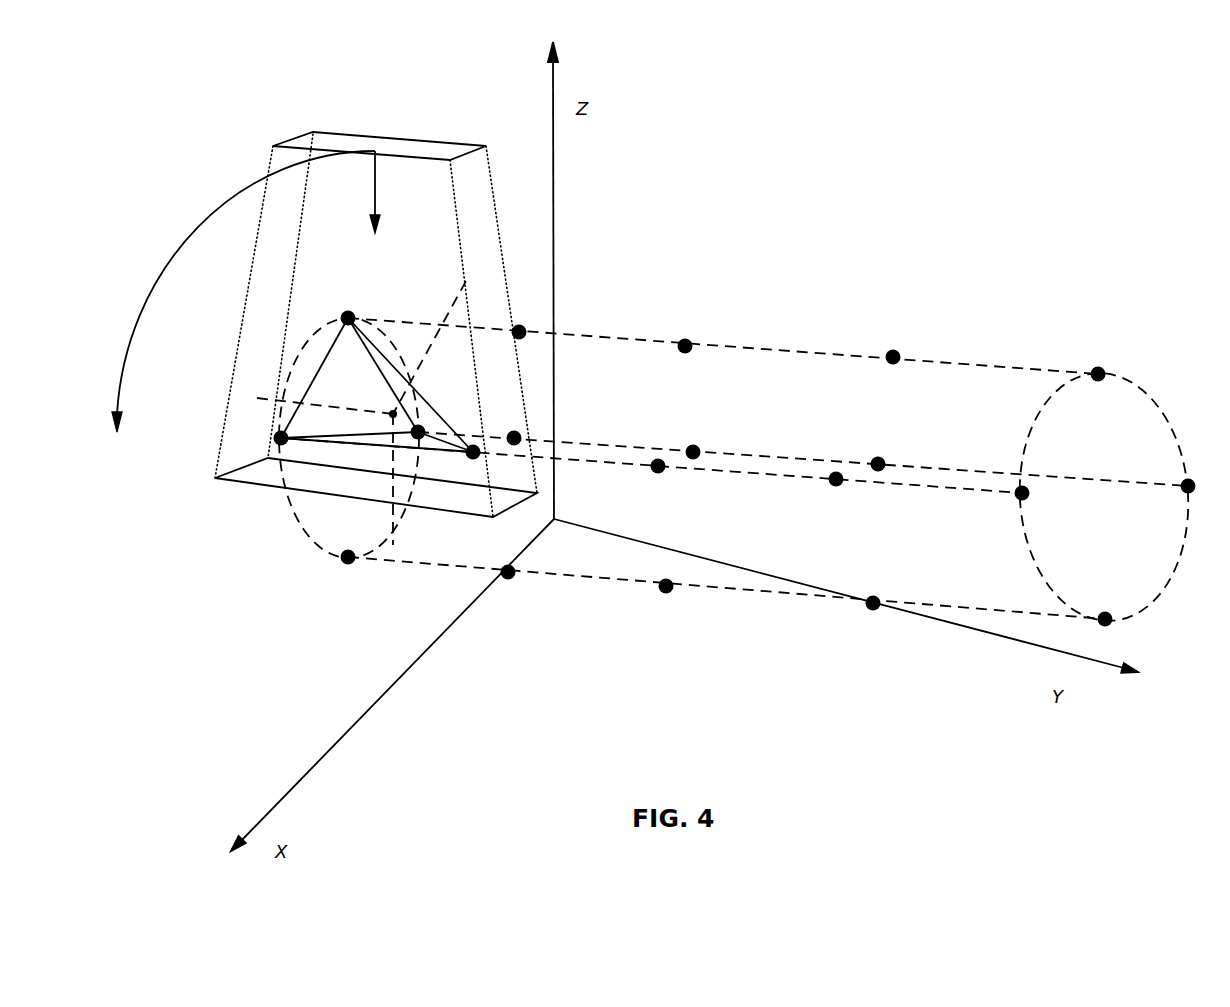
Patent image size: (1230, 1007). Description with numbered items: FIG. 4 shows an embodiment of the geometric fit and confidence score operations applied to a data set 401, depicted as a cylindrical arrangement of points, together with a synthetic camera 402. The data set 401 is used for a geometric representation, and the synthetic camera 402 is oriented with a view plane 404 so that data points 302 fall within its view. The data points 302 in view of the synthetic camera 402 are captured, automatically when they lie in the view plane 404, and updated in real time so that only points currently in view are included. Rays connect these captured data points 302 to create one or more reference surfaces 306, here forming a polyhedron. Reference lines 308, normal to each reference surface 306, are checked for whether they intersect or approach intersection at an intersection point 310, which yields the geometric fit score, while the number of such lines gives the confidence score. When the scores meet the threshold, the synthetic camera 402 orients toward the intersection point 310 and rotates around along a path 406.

The data points 302 is at (349, 316).
The reference surfaces 306 is at (308, 363).
The reference lines 308 is at (462, 288).
The intersection point 310 is at (400, 408).
The data set 401 is at (706, 330).
The synthetic camera 402 is at (465, 150).
The view plane 404 is at (248, 481).
The path 406 is at (191, 232).